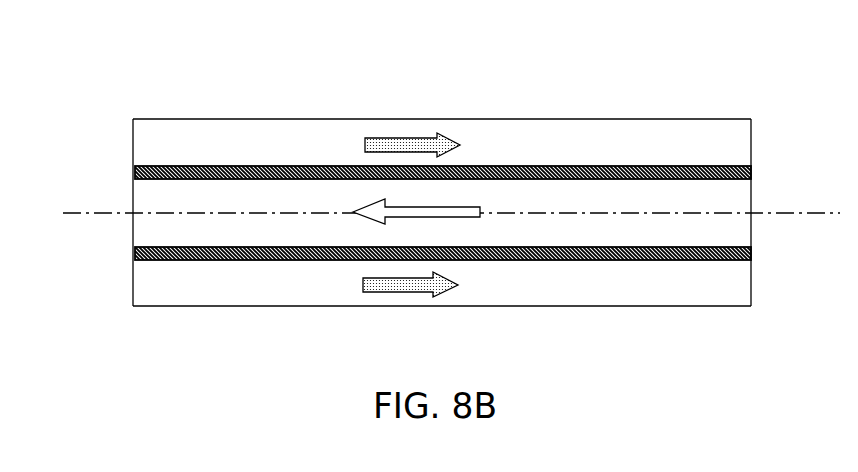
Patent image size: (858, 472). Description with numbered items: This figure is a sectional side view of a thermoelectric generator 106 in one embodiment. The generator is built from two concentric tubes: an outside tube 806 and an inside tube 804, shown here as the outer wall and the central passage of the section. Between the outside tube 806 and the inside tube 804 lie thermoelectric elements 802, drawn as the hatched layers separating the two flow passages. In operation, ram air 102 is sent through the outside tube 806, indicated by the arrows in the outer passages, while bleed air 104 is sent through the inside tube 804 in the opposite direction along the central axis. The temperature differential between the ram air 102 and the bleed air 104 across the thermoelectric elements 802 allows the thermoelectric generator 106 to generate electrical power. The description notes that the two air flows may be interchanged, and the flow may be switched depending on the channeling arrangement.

The thermoelectric generator 106 is at (558, 83).
The outside tube 806 is at (743, 138).
The thermoelectric element 802 is at (133, 174).
The inside tube 804 is at (743, 195).
The bleed air 104 is at (374, 199).
The ram air 102 is at (438, 134).